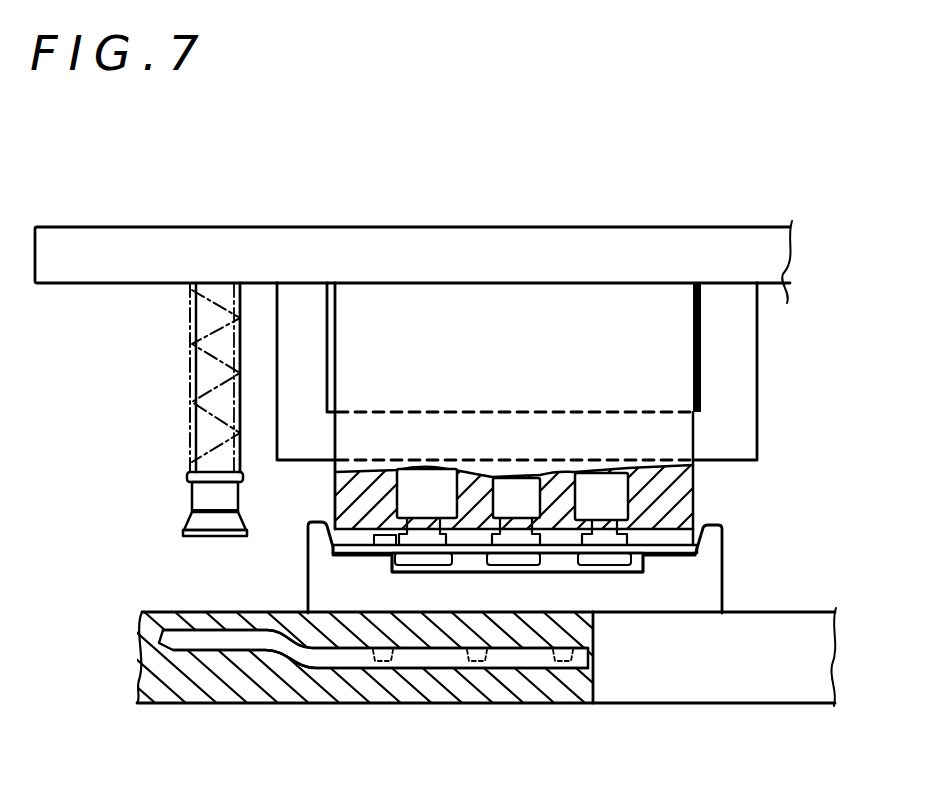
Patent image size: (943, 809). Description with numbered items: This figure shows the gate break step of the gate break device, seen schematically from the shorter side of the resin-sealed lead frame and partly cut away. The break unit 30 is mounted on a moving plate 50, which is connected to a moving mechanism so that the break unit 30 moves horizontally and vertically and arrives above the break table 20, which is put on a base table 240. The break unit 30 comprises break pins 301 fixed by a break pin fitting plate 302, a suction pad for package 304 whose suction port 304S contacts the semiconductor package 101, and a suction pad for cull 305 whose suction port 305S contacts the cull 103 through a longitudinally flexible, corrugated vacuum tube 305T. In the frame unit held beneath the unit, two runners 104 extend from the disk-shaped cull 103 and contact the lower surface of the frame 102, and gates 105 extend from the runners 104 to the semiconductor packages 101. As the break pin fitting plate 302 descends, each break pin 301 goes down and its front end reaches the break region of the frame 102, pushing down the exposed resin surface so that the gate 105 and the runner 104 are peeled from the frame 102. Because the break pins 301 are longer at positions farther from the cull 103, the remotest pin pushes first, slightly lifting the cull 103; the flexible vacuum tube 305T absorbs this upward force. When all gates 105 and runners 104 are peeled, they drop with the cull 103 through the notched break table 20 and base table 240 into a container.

The moving plate 50 is at (784, 257).
The break unit 30 is at (761, 328).
The break pin fitting plate 302 is at (738, 418).
The suction pad for package 304 is at (610, 487).
The suction port 304S is at (613, 534).
The frame 102 is at (696, 527).
The semiconductor package 101 is at (400, 568).
The break pin 301 is at (392, 570).
The break table 20 is at (703, 578).
The suction pad for cull 305 is at (190, 387).
The vacuum tube 305T is at (205, 436).
The suction port 305S is at (186, 531).
The base table 240 is at (732, 690).
The cull 103 is at (203, 636).
The runner 104 is at (342, 658).
The gate 105 is at (478, 656).